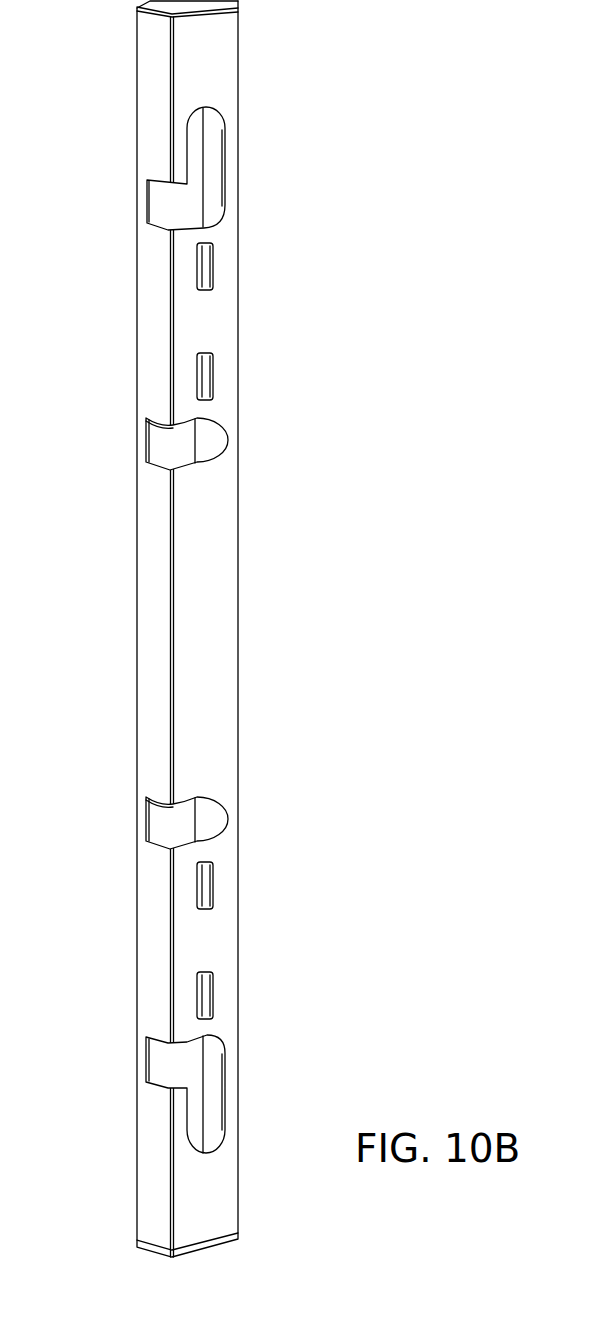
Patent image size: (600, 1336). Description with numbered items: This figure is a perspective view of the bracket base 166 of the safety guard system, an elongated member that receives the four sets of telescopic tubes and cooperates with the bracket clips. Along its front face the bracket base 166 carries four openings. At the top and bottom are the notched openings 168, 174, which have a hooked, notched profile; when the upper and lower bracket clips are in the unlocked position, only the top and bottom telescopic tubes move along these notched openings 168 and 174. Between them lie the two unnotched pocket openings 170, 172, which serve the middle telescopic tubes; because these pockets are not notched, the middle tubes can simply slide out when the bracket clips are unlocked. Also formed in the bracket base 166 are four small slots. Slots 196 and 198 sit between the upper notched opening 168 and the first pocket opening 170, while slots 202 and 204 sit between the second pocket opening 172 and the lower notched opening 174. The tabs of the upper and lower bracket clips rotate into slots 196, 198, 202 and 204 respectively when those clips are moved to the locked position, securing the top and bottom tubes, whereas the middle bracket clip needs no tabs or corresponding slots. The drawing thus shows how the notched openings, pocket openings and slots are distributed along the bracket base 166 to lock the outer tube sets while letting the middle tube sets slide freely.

The bracket base 166 is at (313, 733).
The notched opening 168 is at (165, 203).
The pocket opening 170 is at (165, 439).
The pocket opening 172 is at (165, 815).
The notched opening 174 is at (165, 1053).
The slot 196 is at (205, 267).
The slot 198 is at (205, 377).
The slot 202 is at (205, 886).
The slot 204 is at (205, 996).